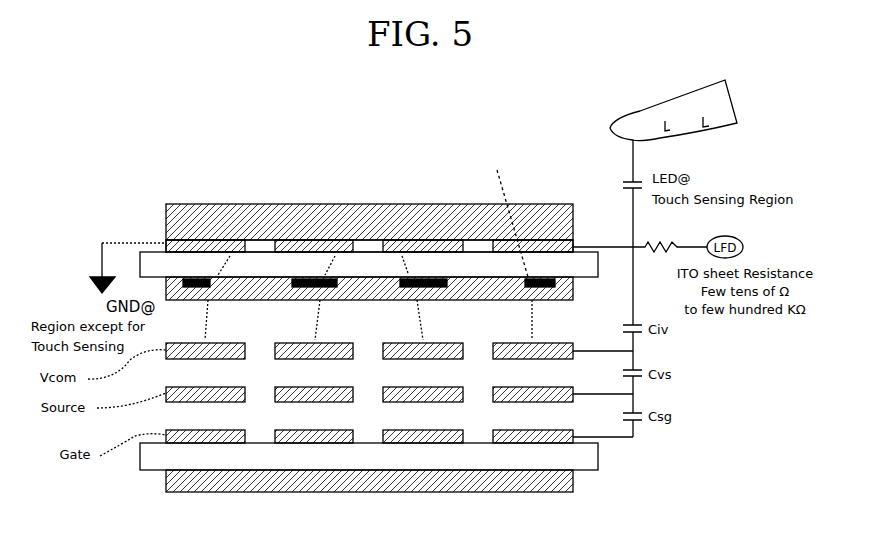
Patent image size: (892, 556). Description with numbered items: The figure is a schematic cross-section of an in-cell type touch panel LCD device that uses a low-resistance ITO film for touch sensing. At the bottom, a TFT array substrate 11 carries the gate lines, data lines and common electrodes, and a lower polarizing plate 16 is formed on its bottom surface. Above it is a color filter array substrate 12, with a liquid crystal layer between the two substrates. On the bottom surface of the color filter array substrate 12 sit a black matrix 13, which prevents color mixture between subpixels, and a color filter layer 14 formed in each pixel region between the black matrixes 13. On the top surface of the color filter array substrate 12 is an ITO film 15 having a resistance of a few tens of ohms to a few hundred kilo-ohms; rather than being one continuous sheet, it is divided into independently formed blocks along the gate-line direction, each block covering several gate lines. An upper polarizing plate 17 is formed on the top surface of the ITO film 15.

The TFT array substrate 11 is at (598, 462).
The color filter array substrate 12 is at (598, 270).
The black matrix 13 is at (573, 290).
The color filter layer 14 is at (560, 300).
The ITO film 15 is at (166, 246).
The lower polarizing plate 16 is at (555, 495).
The upper polarizing plate 17 is at (408, 204).